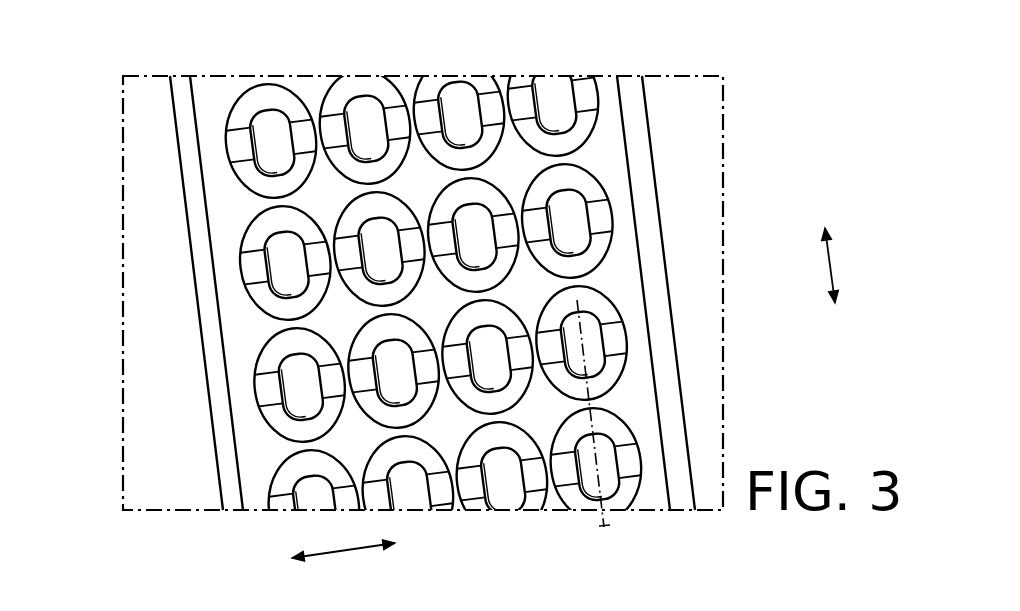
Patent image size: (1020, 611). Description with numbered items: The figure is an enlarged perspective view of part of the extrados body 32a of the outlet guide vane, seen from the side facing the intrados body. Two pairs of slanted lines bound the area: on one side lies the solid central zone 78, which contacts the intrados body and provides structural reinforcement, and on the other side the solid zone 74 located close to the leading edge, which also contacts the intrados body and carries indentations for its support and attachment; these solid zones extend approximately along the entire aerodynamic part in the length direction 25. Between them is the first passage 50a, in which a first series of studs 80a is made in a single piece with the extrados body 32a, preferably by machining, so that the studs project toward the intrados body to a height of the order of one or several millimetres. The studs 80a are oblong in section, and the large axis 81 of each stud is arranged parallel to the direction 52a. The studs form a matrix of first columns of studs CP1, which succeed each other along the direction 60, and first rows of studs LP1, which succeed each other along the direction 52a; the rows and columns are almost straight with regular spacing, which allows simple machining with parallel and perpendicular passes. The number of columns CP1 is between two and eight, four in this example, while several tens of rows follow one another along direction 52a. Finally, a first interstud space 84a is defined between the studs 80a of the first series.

The extrados body 32a is at (752, 105).
The solid central zone 78 is at (163, 413).
The solid zone 74 is at (708, 432).
The first passage 50a is at (637, 378).
The first interstud space 84a is at (400, 438).
The studs 80a is at (477, 225).
The large axis 81 is at (605, 527).
The direction 60 is at (340, 548).
The direction 52a is at (890, 261).
The length direction 25 is at (832, 265).
The first rows of studs LP1 is at (245, 389).
The first columns of studs CP1 is at (348, 70).